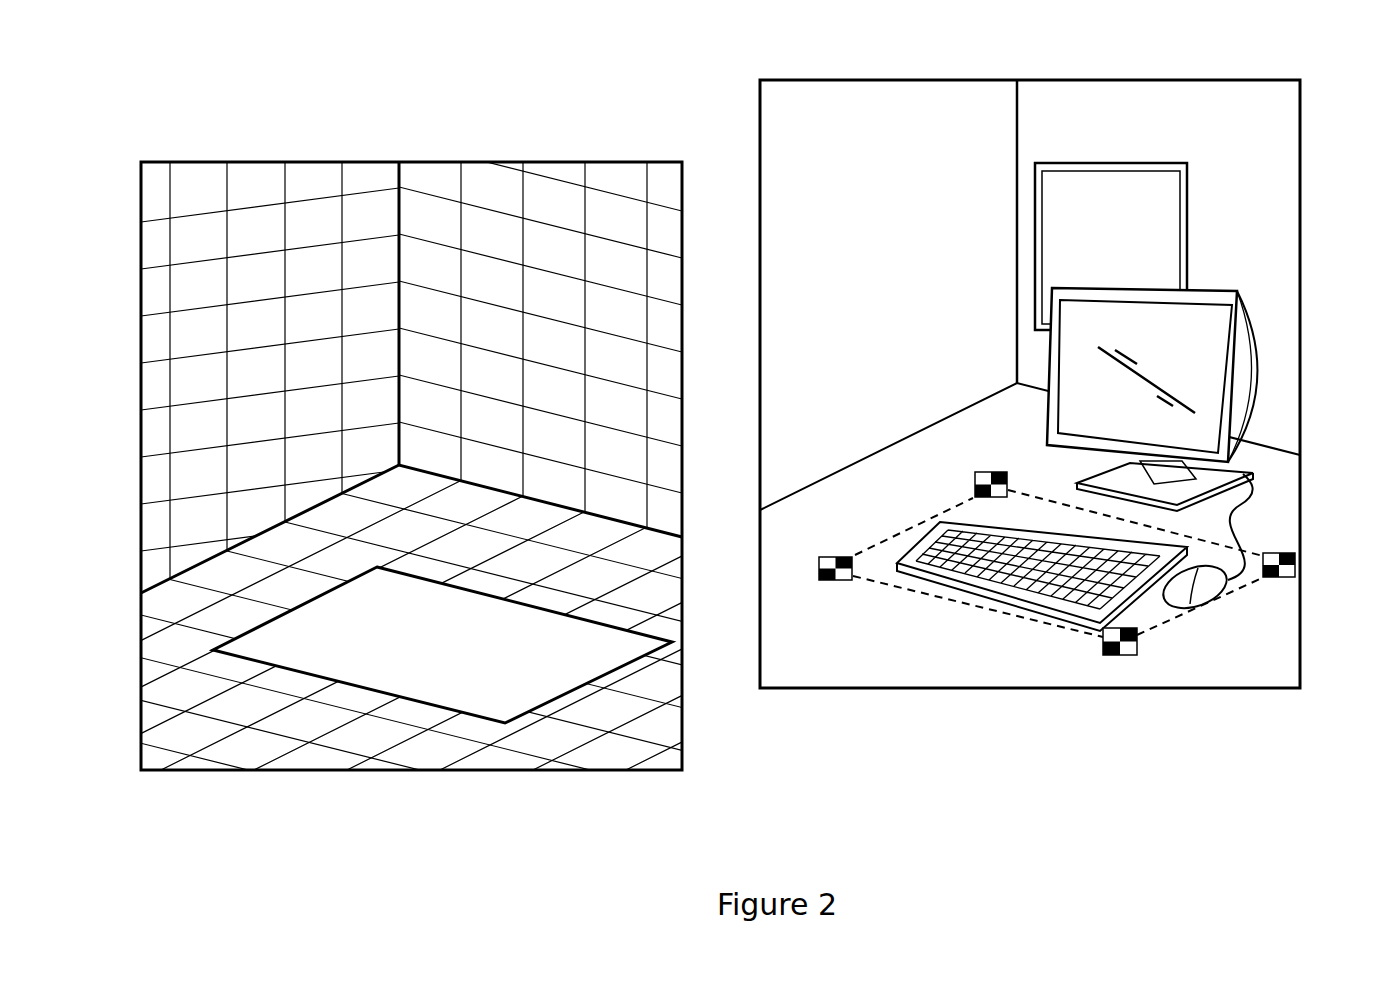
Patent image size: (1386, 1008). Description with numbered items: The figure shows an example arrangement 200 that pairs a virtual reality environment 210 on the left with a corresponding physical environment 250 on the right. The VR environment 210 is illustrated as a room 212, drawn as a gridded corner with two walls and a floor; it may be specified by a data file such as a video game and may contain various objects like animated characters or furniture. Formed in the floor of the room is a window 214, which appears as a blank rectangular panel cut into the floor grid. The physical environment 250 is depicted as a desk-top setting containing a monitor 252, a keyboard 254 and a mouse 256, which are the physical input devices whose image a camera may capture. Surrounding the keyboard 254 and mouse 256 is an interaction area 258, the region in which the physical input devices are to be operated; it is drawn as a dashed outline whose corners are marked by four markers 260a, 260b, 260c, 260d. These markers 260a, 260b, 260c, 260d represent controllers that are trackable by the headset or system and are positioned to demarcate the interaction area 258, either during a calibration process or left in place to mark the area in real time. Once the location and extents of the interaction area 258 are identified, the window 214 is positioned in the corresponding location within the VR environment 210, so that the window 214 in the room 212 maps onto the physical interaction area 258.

The arrangement 200 is at (483, 100).
The VR environment 210 is at (247, 133).
The room 212 is at (207, 397).
The window 214 is at (491, 677).
The physical environment 250 is at (1321, 143).
The monitor 252 is at (1190, 380).
The keyboard 254 is at (977, 553).
The mouse 256 is at (1188, 590).
The interaction area 258 is at (1223, 540).
The marker 260a is at (826, 580).
The marker 260b is at (981, 497).
The marker 260c is at (1270, 578).
The marker 260d is at (1106, 652).